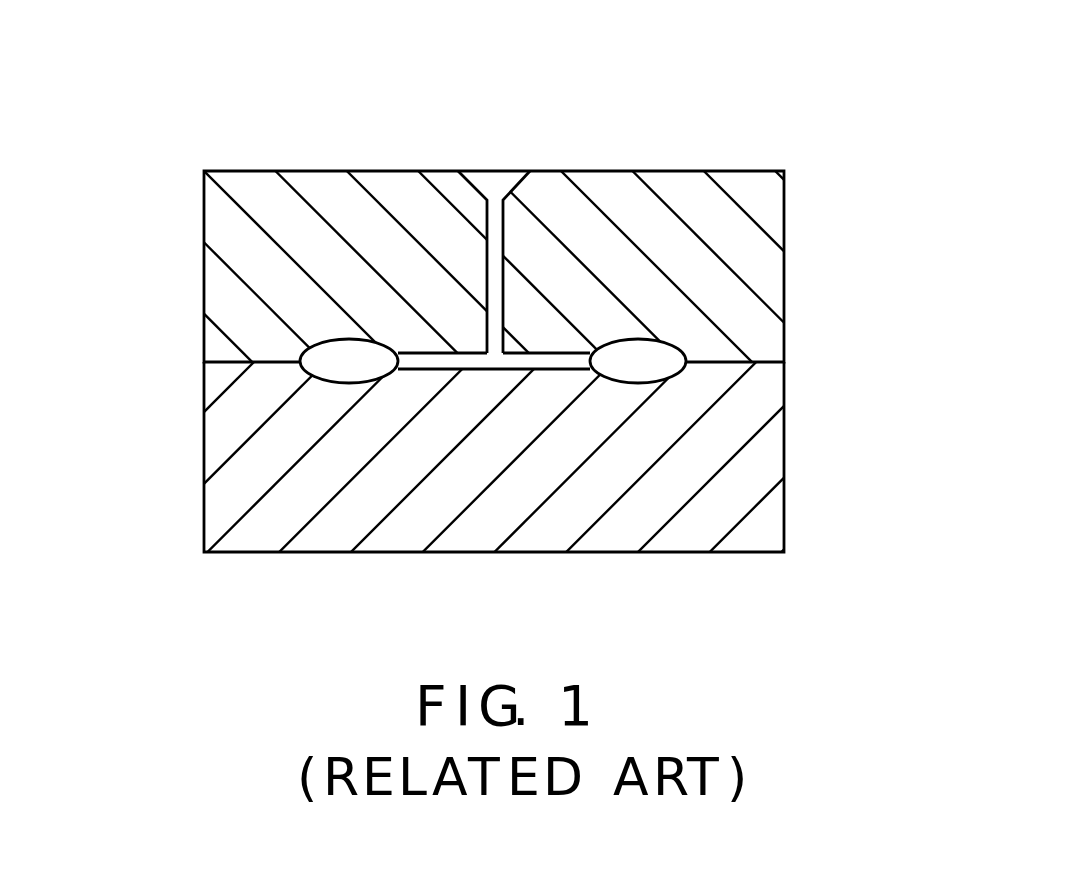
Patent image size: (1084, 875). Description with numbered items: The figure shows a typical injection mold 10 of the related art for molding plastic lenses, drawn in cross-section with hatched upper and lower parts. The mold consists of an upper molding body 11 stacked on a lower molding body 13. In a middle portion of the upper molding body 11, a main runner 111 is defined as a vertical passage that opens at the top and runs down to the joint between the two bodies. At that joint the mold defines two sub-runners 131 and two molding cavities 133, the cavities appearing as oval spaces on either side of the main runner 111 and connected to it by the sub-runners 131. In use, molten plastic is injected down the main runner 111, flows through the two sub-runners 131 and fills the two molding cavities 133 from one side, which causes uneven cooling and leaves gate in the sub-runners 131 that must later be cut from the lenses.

The injection mold 10 is at (542, 358).
The upper molding body 11 is at (763, 268).
The lower molding body 13 is at (737, 420).
The main runner 111 is at (486, 212).
The sub-runners 131 is at (421, 360).
The molding cavities 133 is at (327, 357).